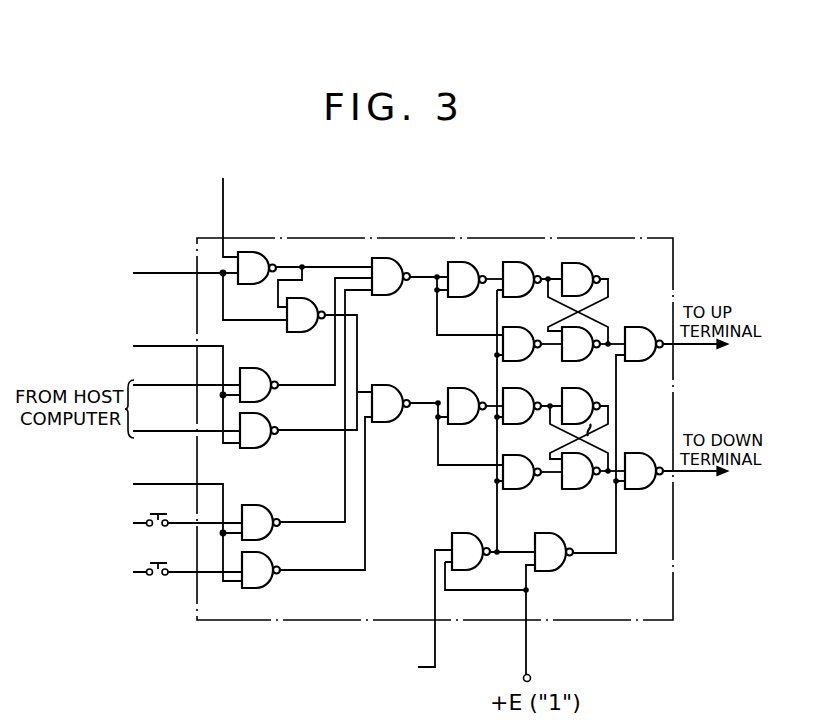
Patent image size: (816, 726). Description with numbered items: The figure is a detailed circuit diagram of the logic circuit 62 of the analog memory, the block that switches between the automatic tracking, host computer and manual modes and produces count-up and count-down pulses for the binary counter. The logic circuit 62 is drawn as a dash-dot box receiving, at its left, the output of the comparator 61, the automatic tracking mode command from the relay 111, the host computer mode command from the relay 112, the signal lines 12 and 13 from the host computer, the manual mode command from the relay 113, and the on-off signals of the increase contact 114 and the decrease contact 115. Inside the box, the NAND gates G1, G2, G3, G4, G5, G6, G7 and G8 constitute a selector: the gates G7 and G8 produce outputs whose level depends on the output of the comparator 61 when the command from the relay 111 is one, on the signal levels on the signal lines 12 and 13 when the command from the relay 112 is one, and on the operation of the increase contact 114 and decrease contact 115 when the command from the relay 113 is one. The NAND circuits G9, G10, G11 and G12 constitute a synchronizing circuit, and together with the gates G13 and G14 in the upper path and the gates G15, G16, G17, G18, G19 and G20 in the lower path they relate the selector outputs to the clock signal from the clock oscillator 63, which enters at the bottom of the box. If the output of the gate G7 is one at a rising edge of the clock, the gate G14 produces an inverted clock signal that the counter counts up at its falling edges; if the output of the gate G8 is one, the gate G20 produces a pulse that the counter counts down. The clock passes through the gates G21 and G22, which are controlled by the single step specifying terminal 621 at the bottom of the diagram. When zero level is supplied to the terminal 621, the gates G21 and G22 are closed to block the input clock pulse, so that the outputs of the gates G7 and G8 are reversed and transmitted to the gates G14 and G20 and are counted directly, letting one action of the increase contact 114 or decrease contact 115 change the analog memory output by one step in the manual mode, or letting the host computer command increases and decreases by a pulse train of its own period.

The comparator 61 is at (279, 205).
The logic circuit 62 is at (597, 238).
The clock oscillator 63 is at (328, 613).
The relay 111 is at (159, 283).
The relay 112 is at (136, 380).
The relay 113 is at (132, 518).
The signal line 12 is at (161, 372).
The signal line 13 is at (161, 430).
The increase contact 114 is at (143, 517).
The decrease contact 115 is at (143, 566).
The single step specifying terminal 621 is at (538, 661).
The NAND gate G1 is at (250, 284).
The NAND gate G2 is at (299, 332).
The NAND gate G3 is at (262, 402).
The NAND gate G4 is at (262, 448).
The NAND gate G5 is at (266, 540).
The NAND gate G6 is at (266, 588).
The NAND gate G7 is at (388, 295).
The NAND gate G8 is at (392, 422).
The NAND circuit G9 is at (466, 297).
The NAND circuit G10 is at (525, 297).
The NAND circuit G11 is at (583, 263).
The NAND circuit G12 is at (525, 361).
The NAND gate G13 is at (590, 361).
The NAND gate G14 is at (651, 361).
The NAND gate G15 is at (470, 424).
The NAND gate G16 is at (525, 424).
The NAND gate G17 is at (600, 398).
The NAND gate G18 is at (525, 489).
The NAND gate G19 is at (588, 489).
The NAND gate G20 is at (651, 489).
The NAND gate G21 is at (470, 570).
The NAND gate G22 is at (556, 571).